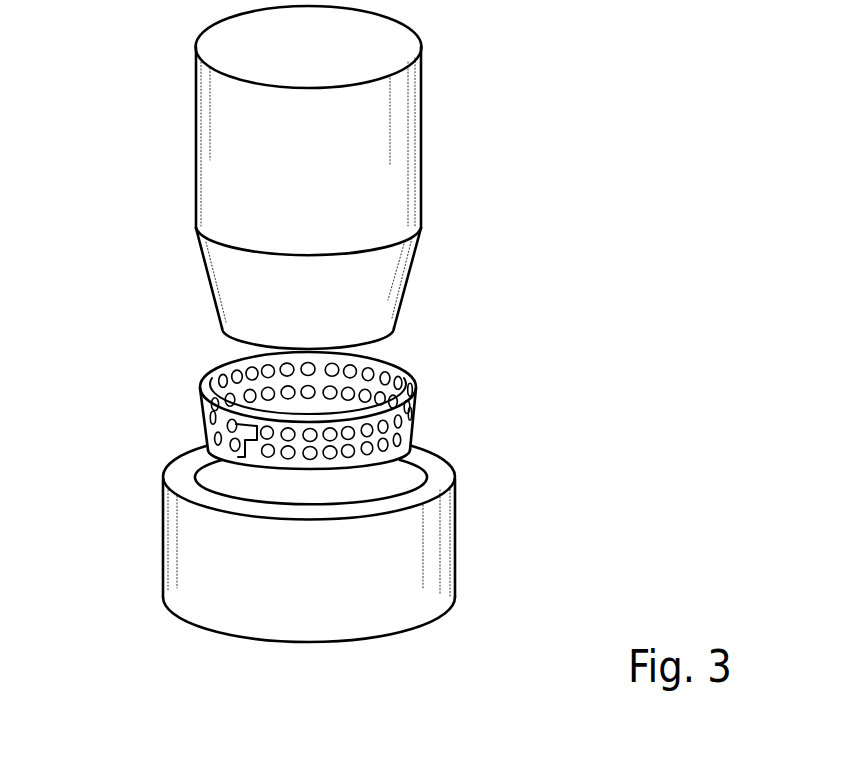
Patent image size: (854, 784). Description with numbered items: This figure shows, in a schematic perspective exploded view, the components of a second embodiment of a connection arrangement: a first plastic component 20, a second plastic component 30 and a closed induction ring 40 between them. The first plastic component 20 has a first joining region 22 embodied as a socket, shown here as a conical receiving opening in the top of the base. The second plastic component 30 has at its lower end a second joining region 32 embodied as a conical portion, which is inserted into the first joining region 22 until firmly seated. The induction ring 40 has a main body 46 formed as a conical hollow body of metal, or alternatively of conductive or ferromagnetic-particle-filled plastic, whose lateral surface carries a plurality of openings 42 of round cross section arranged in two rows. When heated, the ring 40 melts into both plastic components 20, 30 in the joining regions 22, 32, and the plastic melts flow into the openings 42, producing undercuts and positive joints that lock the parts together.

The second plastic component 30 is at (410, 141).
The second joining region 32 is at (408, 278).
The closed induction ring 40 is at (440, 362).
The openings 42 is at (412, 440).
The main body 46 is at (201, 405).
The first plastic component 20 is at (432, 545).
The first joining region 22 is at (231, 496).